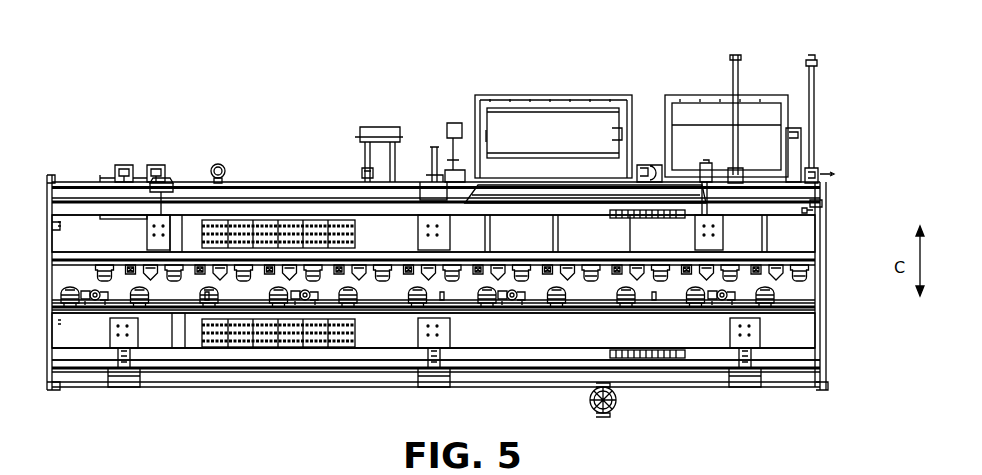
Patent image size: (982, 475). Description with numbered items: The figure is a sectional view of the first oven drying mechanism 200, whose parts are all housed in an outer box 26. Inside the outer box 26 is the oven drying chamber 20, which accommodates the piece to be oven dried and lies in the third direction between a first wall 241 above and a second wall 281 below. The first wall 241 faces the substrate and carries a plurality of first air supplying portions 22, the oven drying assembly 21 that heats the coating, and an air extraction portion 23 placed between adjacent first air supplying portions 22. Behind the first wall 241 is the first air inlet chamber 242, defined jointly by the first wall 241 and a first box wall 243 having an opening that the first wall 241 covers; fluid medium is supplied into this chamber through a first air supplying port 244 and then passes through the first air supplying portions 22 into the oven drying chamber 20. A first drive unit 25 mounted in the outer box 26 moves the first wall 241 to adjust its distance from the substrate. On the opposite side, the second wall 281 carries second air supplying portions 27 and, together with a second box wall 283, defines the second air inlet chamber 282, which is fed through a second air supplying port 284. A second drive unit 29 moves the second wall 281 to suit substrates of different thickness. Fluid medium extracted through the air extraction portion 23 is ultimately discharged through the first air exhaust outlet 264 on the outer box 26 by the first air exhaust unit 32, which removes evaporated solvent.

The first oven drying mechanism 200 is at (542, 18).
The oven drying chamber 20 is at (815, 287).
The oven drying assembly 21 is at (118, 262).
The first air supplying portion 22 is at (82, 273).
The air extraction portion 23 is at (152, 272).
The first drive unit 25 is at (166, 183).
The outer box 26 is at (823, 320).
The second air supplying portion 27 is at (558, 300).
The second drive unit 29 is at (117, 340).
The first air exhaust unit 32 is at (572, 108).
The first wall 241 is at (128, 166).
The first air inlet chamber 242 is at (97, 222).
The first box wall 243 is at (780, 216).
The first air supplying port 244 is at (240, 235).
The first air exhaust outlet 264 is at (540, 195).
The second wall 281 is at (523, 307).
The second air inlet chamber 282 is at (88, 338).
The second box wall 283 is at (378, 348).
The second air supplying port 284 is at (248, 335).